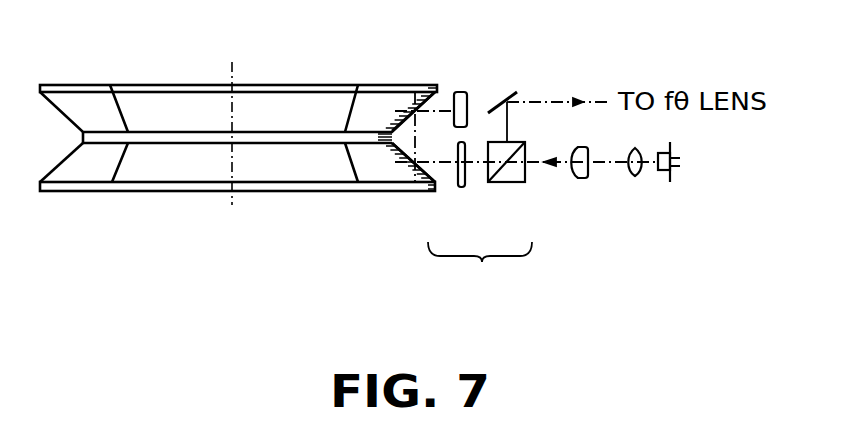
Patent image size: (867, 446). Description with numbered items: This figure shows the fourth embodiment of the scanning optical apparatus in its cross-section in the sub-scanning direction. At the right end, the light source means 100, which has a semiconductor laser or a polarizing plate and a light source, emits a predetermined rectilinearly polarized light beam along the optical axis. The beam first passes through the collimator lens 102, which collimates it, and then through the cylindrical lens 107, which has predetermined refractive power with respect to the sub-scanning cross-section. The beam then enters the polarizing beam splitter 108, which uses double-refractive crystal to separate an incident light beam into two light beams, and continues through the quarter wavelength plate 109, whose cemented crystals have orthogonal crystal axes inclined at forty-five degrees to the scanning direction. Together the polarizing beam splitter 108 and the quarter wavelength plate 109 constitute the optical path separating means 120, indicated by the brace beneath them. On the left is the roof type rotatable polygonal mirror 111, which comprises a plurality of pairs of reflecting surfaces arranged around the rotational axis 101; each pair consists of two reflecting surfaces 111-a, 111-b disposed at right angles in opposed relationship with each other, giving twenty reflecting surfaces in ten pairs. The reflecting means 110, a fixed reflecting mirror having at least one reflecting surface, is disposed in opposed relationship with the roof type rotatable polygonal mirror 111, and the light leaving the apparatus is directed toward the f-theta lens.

The light source means 100 is at (663, 171).
The collimator lens 102 is at (633, 176).
The cylindrical lens 107 is at (578, 178).
The polarizing beam splitter 108 is at (507, 183).
The quarter wavelength plate 109 is at (455, 187).
The reflecting means 110 is at (468, 107).
The optical path separating means 120 is at (480, 268).
The rotational axis 101 is at (231, 72).
The roof type rotatable polygonal mirror 111 is at (308, 85).
The reflecting surface 111-a is at (380, 193).
The reflecting surface 111-b is at (397, 85).